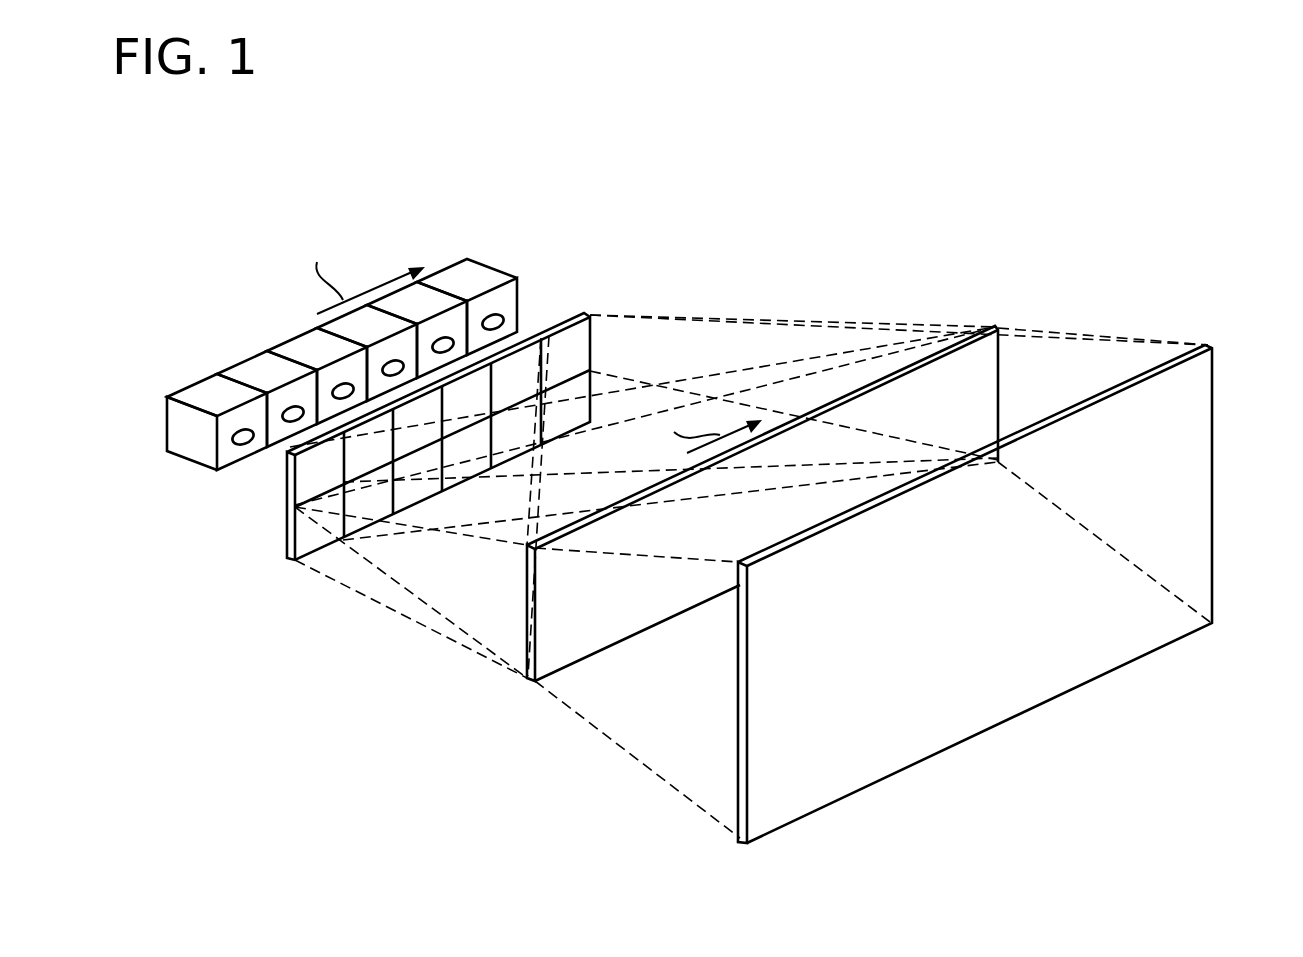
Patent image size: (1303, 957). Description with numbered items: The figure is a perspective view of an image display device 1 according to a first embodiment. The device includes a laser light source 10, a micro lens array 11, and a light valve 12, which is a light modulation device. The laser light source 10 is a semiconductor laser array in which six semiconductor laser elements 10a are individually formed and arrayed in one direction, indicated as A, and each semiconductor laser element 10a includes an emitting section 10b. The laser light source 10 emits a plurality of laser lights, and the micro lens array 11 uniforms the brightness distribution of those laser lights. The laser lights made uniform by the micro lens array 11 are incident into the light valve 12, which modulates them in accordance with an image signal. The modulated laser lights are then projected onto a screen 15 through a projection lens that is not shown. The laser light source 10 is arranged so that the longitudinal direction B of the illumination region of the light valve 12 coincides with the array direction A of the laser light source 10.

The image display device 1 is at (1245, 202).
The laser light source 10 is at (377, 281).
The semiconductor laser element 10a is at (200, 395).
The emitting section 10b is at (495, 310).
The micro lens array 11 is at (592, 311).
The light valve 12 is at (997, 326).
The screen 15 is at (1212, 343).